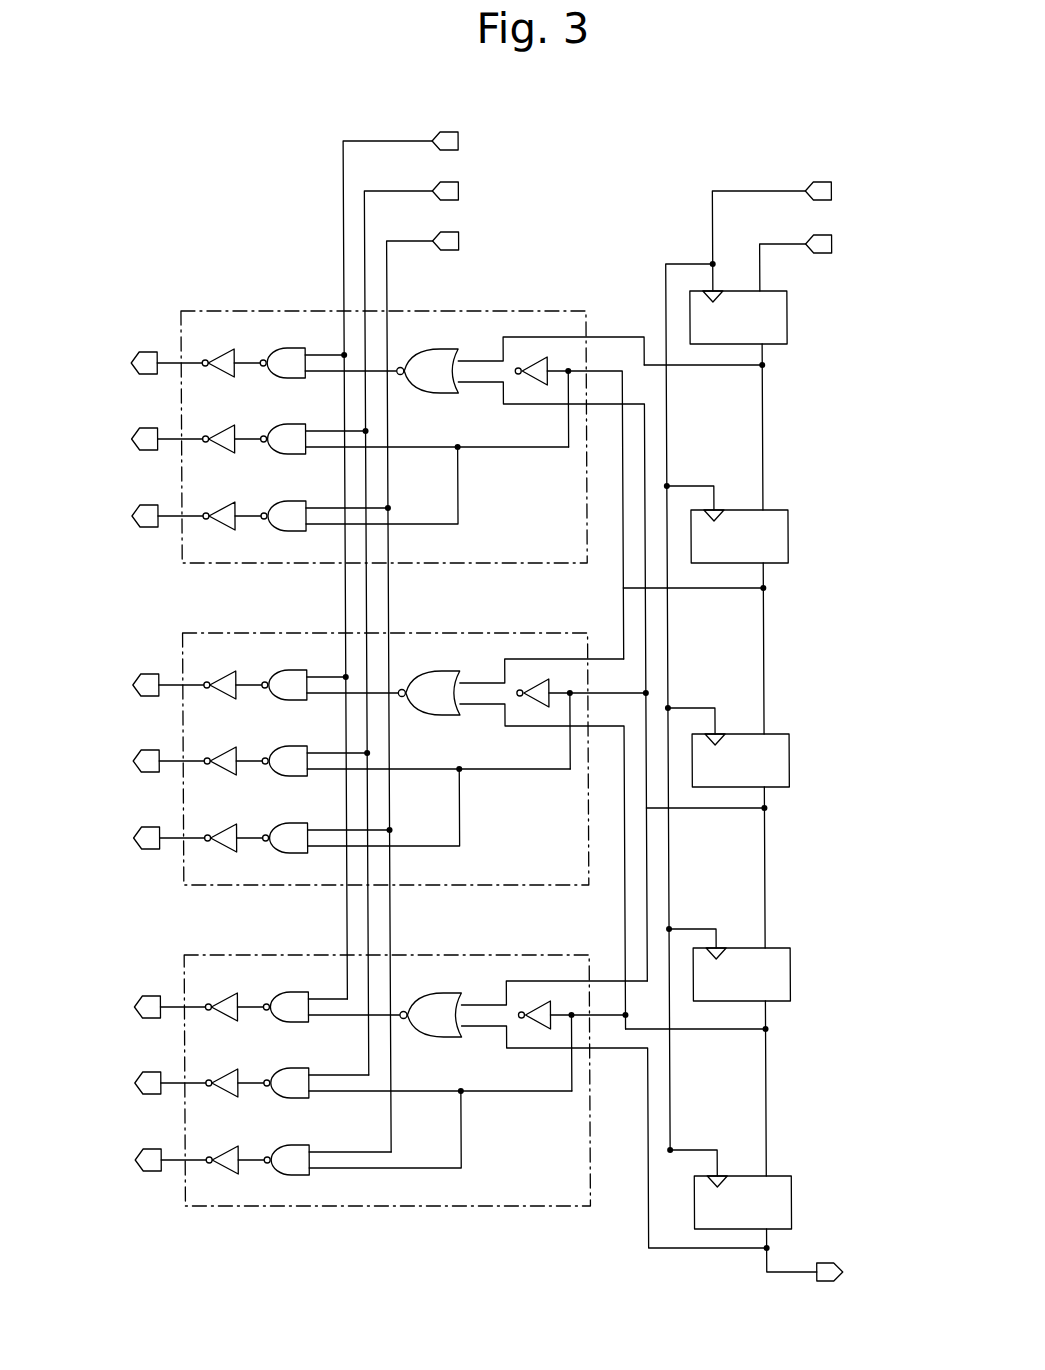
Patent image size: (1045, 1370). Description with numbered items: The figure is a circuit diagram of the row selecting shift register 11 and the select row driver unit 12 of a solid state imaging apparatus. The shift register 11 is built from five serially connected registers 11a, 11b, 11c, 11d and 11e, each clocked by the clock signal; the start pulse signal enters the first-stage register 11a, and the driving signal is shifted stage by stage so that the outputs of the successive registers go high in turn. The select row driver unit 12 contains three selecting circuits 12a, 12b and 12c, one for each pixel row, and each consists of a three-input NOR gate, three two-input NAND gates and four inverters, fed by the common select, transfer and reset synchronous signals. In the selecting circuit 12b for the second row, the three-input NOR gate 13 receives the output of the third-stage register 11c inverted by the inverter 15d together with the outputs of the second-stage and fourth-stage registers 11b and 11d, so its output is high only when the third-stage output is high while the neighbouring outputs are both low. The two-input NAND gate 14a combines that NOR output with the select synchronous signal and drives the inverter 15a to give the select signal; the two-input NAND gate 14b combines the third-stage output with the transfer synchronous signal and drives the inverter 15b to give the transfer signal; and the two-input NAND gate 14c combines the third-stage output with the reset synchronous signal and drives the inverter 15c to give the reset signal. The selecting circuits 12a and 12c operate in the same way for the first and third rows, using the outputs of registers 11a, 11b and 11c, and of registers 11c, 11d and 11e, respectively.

The row selecting shift register 11 is at (641, 1250).
The first-stage register 11a is at (787, 317).
The second-stage register 11b is at (787, 536).
The third-stage register 11c is at (787, 760).
The fourth-stage register 11d is at (787, 974).
The fifth-stage register 11e is at (787, 1202).
The select row driver unit 12 is at (468, 1230).
The selecting circuit 12a is at (216, 564).
The selecting circuit 12b is at (216, 886).
The selecting circuit 12c is at (212, 1207).
The 3-input NOR gate 13 is at (432, 716).
The 2-input NAND gate 14a is at (288, 670).
The 2-input NAND gate 14b is at (295, 746).
The 2-input NAND gate 14c is at (294, 823).
The inverter 15a is at (222, 670).
The inverter 15b is at (219, 747).
The inverter 15c is at (218, 824).
The inverter 15d is at (533, 708).